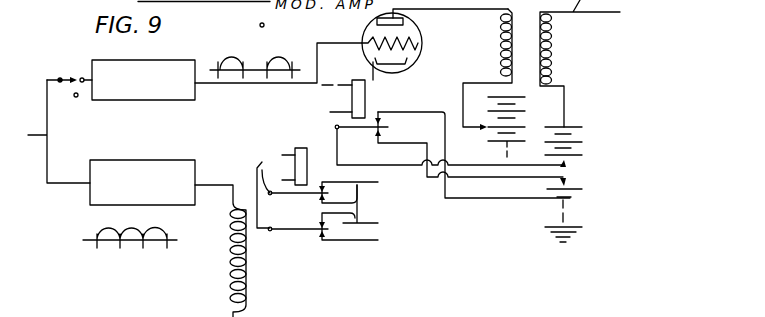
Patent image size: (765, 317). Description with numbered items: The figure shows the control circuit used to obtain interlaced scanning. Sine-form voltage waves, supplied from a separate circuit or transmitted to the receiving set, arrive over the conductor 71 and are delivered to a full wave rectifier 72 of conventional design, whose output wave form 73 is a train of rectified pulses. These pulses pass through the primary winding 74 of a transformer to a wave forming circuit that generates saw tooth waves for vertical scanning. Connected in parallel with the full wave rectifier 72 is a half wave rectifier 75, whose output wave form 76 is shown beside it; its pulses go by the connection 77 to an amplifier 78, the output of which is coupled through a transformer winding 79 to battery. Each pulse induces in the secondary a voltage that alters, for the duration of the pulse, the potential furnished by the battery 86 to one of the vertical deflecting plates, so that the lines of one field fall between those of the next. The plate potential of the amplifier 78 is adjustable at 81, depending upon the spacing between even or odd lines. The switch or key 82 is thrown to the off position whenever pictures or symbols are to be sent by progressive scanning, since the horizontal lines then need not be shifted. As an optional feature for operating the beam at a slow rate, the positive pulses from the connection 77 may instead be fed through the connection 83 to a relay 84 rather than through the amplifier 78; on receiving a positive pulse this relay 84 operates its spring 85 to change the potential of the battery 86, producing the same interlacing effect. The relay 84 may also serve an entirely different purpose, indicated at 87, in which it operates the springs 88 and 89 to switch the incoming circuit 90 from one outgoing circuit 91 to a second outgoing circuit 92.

The conductor 71 is at (38, 133).
The full wave rectifier 72 is at (197, 173).
The output wave form 73 is at (152, 243).
The primary winding 74 is at (244, 255).
The half wave rectifier 75 is at (197, 92).
The output wave form 76 is at (222, 64).
The connection 77 is at (262, 84).
The amplifier 78 is at (420, 32).
The transformer winding 79 is at (515, 15).
The plate potential adjustment 81 is at (462, 110).
The switch or key 82 is at (62, 78).
The connection 83 is at (332, 85).
The relay 84 is at (365, 97).
The spring 85 is at (375, 124).
The battery 86 is at (577, 142).
The relay switching arrangement 87 is at (292, 152).
The spring 88 is at (293, 195).
The spring 89 is at (293, 230).
The incoming circuit 90 is at (268, 178).
The outgoing circuit 91 is at (353, 213).
The second outgoing circuit 92 is at (351, 192).